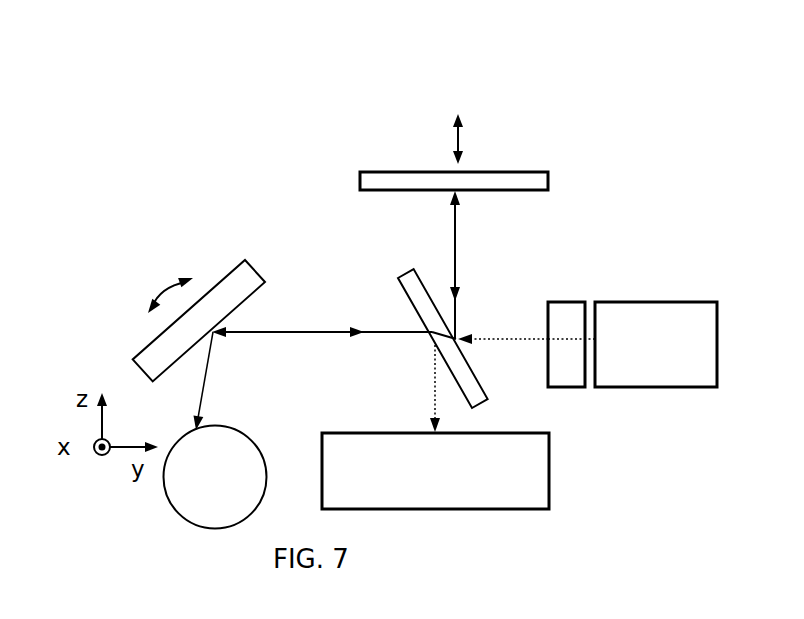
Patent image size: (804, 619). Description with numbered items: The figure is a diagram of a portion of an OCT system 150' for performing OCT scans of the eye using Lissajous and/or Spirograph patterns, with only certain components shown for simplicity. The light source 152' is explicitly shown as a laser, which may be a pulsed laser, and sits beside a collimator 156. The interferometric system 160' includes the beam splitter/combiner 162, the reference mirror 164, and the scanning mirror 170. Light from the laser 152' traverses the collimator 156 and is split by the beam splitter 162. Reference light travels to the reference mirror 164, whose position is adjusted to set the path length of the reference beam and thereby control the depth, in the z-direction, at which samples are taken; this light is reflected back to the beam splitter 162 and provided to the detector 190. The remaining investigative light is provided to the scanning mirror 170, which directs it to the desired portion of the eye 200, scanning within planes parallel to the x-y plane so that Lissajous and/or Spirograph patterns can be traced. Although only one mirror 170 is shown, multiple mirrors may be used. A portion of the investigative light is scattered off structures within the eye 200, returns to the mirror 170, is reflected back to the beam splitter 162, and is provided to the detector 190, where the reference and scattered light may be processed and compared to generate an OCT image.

The OCT system 150' is at (310, 54).
The interferometric system 160' is at (369, 136).
The reference mirror 164 is at (550, 190).
The beam splitter/combiner 162 is at (400, 286).
The scanning mirror 170 is at (228, 270).
The collimator 156 is at (567, 302).
The light source 152' is at (656, 344).
The detector 190 is at (435, 471).
The eye 200 is at (215, 477).